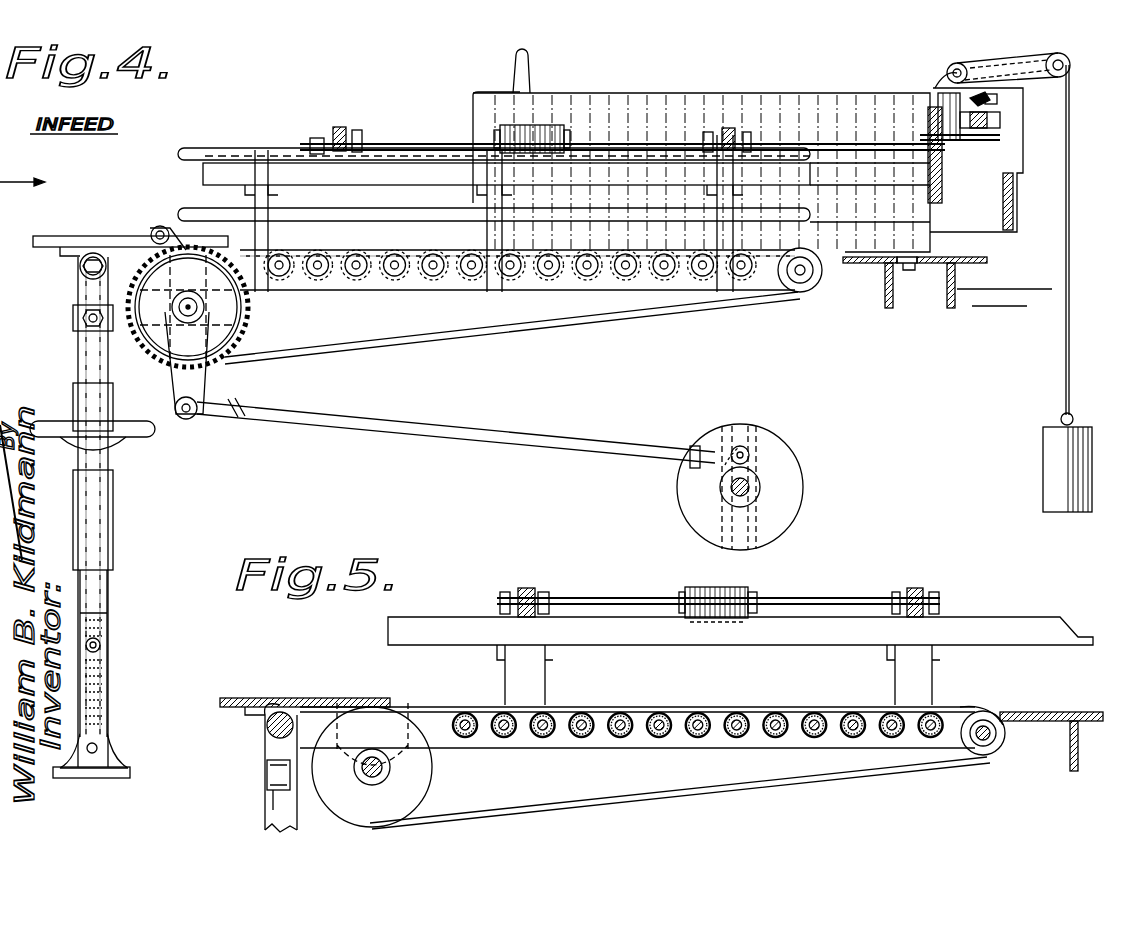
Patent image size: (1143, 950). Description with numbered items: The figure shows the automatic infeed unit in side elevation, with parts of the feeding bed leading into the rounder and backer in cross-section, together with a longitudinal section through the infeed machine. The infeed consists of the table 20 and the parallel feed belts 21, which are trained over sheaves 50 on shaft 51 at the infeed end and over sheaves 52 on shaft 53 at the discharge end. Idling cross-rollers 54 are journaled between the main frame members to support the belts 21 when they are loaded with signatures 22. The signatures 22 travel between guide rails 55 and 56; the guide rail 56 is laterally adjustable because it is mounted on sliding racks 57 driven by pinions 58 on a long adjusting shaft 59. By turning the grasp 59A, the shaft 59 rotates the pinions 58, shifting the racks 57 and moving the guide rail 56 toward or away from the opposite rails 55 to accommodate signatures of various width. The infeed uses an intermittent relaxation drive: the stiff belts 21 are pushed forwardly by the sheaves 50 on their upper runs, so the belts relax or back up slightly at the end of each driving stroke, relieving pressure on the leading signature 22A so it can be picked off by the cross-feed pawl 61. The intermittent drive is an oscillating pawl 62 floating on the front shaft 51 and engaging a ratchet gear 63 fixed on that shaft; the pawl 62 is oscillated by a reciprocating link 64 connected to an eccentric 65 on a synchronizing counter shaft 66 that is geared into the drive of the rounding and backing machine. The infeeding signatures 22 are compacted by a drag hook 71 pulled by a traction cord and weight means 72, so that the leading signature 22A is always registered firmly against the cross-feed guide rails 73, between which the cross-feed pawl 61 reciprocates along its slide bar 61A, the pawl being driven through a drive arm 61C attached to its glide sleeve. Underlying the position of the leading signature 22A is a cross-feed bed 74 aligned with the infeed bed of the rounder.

In FIG. 4, the table 20 is at (78, 226).
In FIG. 5, the table 20 is at (303, 686).
In FIG. 4, the feed belts 21 is at (448, 238).
In FIG. 5, the feed belts 21 is at (648, 708).
In FIG. 4, the signatures 22 is at (690, 103).
In FIG. 4, the leading signature 22A is at (915, 100).
In FIG. 5, the sheaves 50 is at (405, 775).
In FIG. 4, the shaft 51 is at (200, 305).
In FIG. 5, the shaft 51 is at (372, 772).
In FIG. 4, the sheaves 52 is at (800, 292).
In FIG. 5, the sheaves 52 is at (968, 740).
In FIG. 5, the shaft 53 is at (985, 742).
In FIG. 4, the idling cross-rollers 54 is at (322, 278).
In FIG. 5, the idling cross-rollers 54 is at (555, 737).
In FIG. 4, the guide rails 55 is at (200, 212).
In FIG. 4, the guide rail 56 is at (243, 181).
In FIG. 5, the guide rail 56 is at (470, 644).
In FIG. 4, the sliding racks 57 is at (360, 130).
In FIG. 5, the sliding racks 57 is at (548, 600).
In FIG. 4, the pinions 58 is at (340, 128).
In FIG. 5, the pinions 58 is at (527, 590).
In FIG. 4, the adjusting shaft 59 is at (385, 135).
In FIG. 5, the adjusting shaft 59 is at (805, 600).
In FIG. 4, the grasp 59A is at (538, 125).
In FIG. 5, the grasp 59A is at (738, 588).
In FIG. 4, the cross-feed pawl 61 is at (945, 170).
In FIG. 4, the slide bar 61A is at (978, 128).
In FIG. 4, the drive arm 61C is at (1000, 103).
In FIG. 4, the oscillating pawl 62 is at (156, 230).
In FIG. 4, the ratchet gear 63 is at (228, 322).
In FIG. 4, the reciprocating link 64 is at (430, 425).
In FIG. 4, the eccentric 65 is at (793, 462).
In FIG. 4, the synchronizing counter shaft 66 is at (752, 493).
In FIG. 4, the drag hook 71 is at (497, 90).
In FIG. 4, the traction cord and weight means 72 is at (1095, 406).
In FIG. 4, the cross-feed guide rails 73 is at (932, 108).
In FIG. 4, the cross-feed bed 74 is at (920, 282).
In FIG. 5, the cross-feed bed 74 is at (1090, 734).